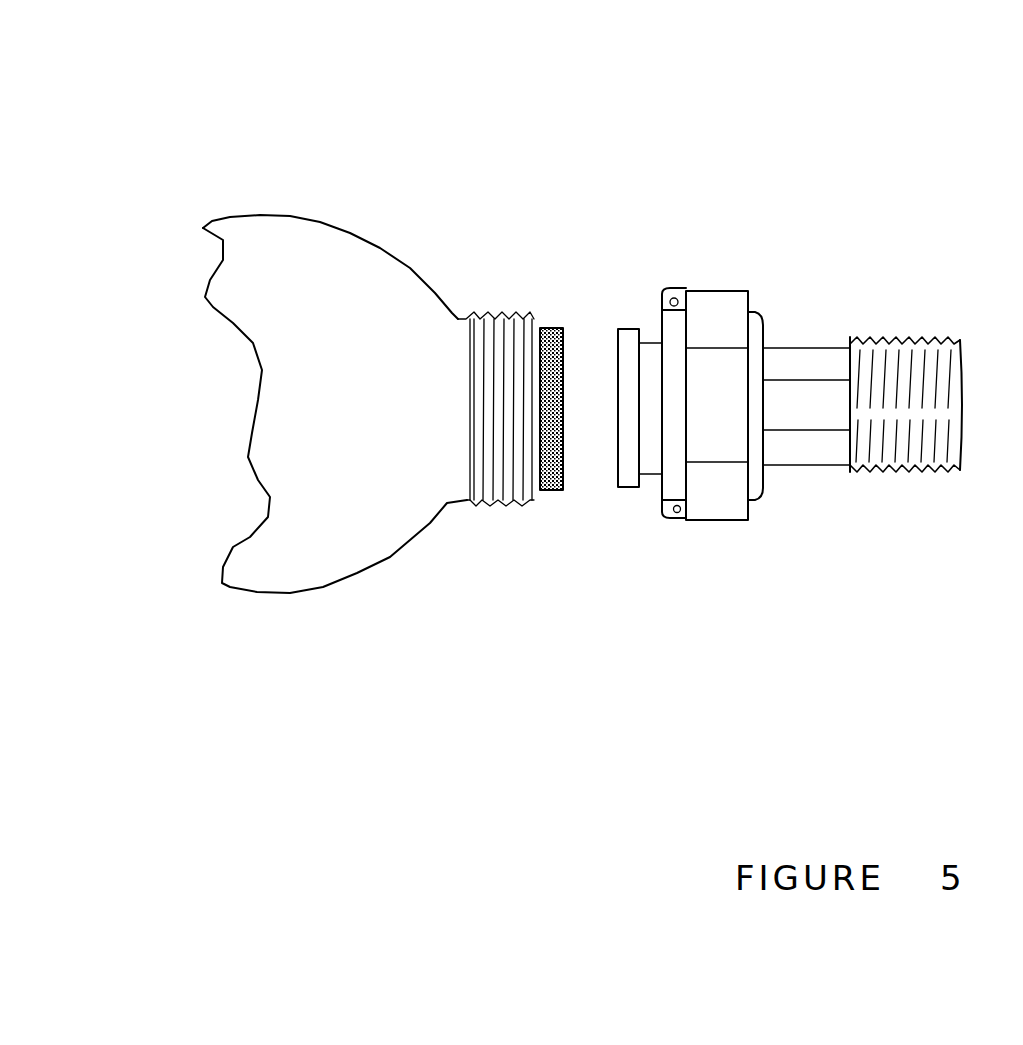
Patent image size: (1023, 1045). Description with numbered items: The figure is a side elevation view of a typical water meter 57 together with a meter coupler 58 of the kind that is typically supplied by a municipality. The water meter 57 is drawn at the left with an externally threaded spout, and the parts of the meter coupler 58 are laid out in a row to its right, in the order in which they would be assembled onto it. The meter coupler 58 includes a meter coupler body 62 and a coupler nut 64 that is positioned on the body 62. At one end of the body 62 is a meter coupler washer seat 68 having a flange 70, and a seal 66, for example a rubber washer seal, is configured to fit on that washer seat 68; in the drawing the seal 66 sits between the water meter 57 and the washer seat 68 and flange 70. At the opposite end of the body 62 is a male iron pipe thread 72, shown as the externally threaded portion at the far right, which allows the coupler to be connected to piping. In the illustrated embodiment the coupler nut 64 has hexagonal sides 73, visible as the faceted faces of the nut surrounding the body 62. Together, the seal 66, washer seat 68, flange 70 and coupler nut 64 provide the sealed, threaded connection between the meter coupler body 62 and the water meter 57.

The water meter 57 is at (381, 243).
The meter coupler 58 is at (919, 152).
The meter coupler body 62 is at (819, 482).
The coupler nut 64 is at (721, 283).
The seal 66 is at (559, 319).
The meter coupler washer seat 68 is at (611, 488).
The flange 70 is at (646, 335).
The male iron pipe thread 72 is at (918, 326).
The hexagonal sides 73 is at (724, 510).